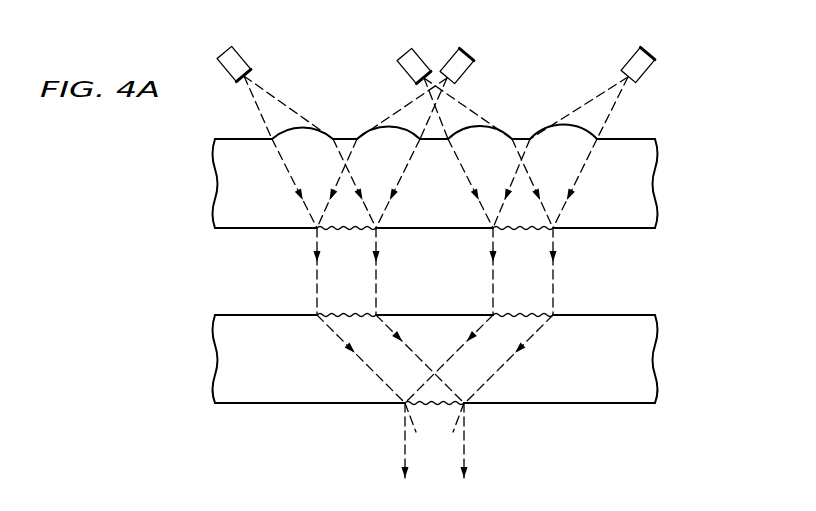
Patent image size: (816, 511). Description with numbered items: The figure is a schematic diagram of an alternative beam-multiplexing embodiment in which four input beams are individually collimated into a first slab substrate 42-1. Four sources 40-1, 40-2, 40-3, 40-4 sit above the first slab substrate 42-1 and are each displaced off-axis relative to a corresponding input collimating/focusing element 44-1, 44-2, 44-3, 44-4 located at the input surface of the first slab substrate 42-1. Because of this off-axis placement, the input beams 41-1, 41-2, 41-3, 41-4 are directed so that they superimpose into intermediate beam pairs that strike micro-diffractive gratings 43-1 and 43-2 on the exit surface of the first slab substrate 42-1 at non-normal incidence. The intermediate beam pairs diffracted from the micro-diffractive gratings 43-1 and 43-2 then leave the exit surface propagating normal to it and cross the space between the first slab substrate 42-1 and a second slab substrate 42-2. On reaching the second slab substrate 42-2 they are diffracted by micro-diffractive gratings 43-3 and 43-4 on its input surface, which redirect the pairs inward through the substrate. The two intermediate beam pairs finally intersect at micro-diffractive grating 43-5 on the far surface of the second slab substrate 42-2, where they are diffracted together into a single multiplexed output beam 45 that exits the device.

The source 40-1 is at (222, 55).
The source 40-2 is at (470, 57).
The source 40-3 is at (401, 57).
The source 40-4 is at (644, 55).
The input beam 41-1 is at (265, 88).
The input beam 41-2 is at (399, 109).
The input beam 41-3 is at (470, 109).
The input beam 41-4 is at (605, 90).
The first slab substrate 42-1 is at (215, 176).
The second slab substrate 42-2 is at (215, 371).
The micro-diffractive grating 43-1 is at (357, 231).
The micro-diffractive grating 43-2 is at (515, 231).
The micro-diffractive grating 43-3 is at (322, 319).
The micro-diffractive grating 43-4 is at (545, 319).
The micro-diffractive grating 43-5 is at (441, 408).
The input collimating/focusing element 44-1 is at (271, 126).
The input collimating/focusing element 44-2 is at (384, 127).
The input collimating/focusing element 44-3 is at (485, 125).
The input collimating/focusing element 44-4 is at (594, 125).
The multiplexed output beam 45 is at (388, 452).